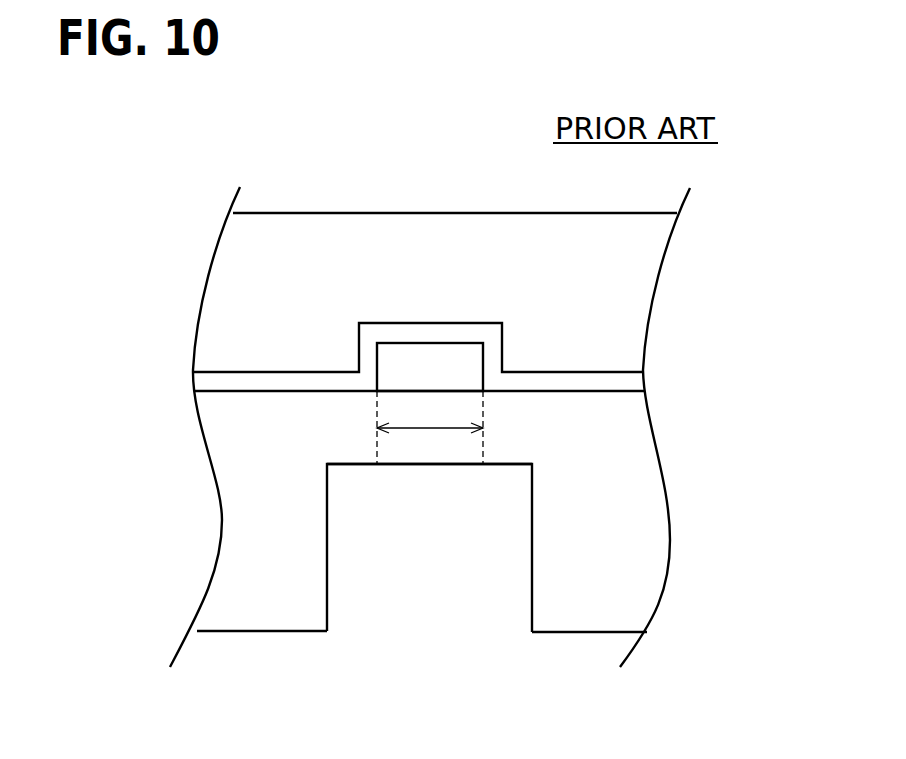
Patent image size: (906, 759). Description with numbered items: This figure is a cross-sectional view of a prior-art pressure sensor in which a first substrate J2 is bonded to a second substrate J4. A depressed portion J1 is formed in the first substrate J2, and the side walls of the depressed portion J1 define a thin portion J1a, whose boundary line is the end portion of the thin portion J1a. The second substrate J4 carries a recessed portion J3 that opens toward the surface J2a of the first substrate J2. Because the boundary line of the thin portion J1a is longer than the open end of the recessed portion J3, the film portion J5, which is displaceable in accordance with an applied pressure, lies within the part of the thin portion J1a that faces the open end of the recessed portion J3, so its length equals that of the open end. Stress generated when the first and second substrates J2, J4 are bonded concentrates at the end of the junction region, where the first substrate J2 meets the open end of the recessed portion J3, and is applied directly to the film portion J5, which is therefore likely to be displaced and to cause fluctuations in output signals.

The second substrate J4 is at (281, 264).
The recessed portion J3 is at (378, 370).
The first substrate J2 is at (268, 586).
The surface of the first substrate J2a is at (607, 391).
The depressed portion J1 is at (530, 570).
The thin portion J1a is at (353, 445).
The film portion J5 is at (433, 428).